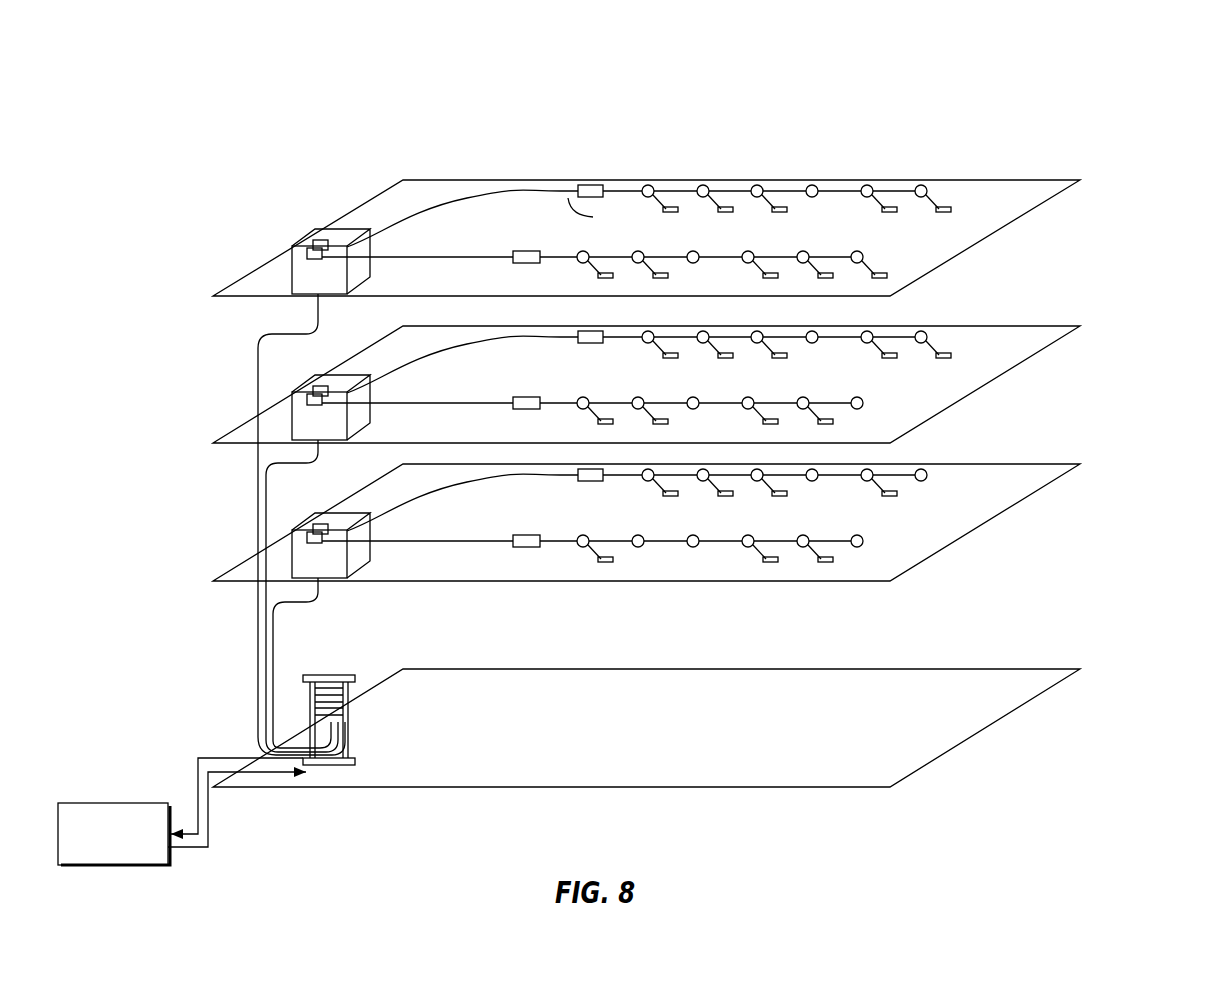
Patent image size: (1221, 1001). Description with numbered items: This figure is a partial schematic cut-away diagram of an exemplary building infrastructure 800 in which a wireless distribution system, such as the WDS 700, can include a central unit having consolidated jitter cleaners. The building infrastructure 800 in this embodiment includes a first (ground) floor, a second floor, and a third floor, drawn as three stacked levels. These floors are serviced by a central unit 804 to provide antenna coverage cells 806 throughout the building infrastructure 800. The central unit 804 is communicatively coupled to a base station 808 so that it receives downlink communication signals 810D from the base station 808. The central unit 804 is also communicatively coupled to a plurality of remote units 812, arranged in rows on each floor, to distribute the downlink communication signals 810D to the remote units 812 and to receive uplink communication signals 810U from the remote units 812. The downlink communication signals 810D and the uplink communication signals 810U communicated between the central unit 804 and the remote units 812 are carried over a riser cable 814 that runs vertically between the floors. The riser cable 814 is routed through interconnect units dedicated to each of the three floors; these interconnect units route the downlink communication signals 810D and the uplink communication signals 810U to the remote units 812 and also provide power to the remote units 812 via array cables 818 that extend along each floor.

The building infrastructure 800 is at (770, 113).
The antenna coverage cells 806 is at (1024, 341).
The WDS 700 is at (990, 599).
The downlink communication signals 810D is at (512, 191).
The uplink communication signals 810U is at (196, 755).
The riser cable 814 is at (258, 681).
The central unit 804 is at (357, 730).
The base station 808 is at (132, 848).
The array cables 818 is at (553, 190).
The remote units 812 is at (888, 206).